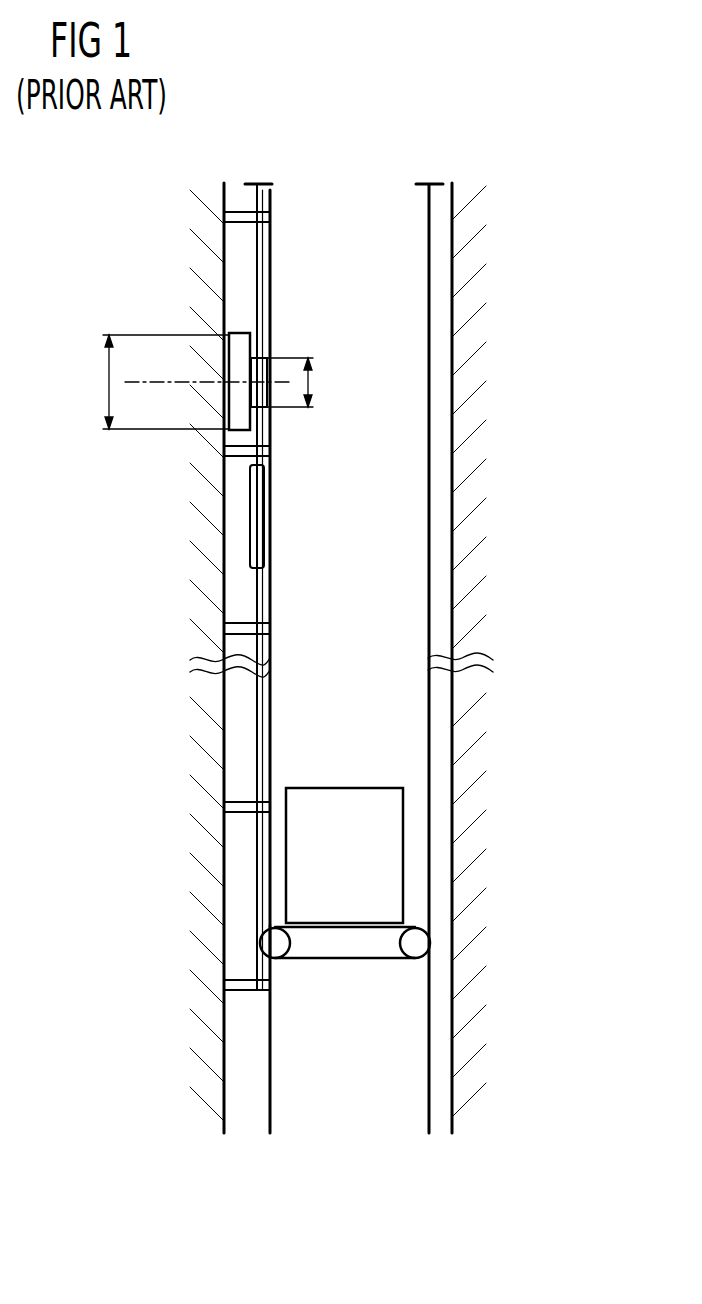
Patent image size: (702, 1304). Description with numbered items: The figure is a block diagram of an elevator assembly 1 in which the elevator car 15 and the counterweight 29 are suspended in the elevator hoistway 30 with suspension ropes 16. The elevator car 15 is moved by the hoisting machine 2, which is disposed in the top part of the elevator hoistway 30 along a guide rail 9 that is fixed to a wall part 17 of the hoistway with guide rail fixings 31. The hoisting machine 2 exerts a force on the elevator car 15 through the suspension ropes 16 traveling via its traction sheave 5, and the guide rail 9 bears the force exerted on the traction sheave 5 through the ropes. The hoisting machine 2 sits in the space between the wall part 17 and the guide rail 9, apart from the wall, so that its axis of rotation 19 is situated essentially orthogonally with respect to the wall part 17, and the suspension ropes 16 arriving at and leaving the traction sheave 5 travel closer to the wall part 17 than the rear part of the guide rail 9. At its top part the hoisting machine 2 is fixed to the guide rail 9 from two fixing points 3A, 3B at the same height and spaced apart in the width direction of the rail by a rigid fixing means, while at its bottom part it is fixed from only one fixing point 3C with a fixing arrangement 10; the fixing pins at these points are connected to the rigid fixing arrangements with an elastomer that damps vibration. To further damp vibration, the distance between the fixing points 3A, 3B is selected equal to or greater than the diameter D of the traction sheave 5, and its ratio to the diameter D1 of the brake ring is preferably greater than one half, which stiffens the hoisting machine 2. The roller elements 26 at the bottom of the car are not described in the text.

The elevator assembly 1 is at (587, 321).
The hoisting machine 2 is at (238, 398).
The fixing point 3A is at (320, 334).
The fixing point 3B is at (257, 345).
The fixing point 3C is at (320, 431).
The traction sheave 5 is at (253, 363).
The guide rail 9 is at (272, 256).
The fixing arrangement 10 is at (257, 418).
The elevator car 15 is at (343, 787).
The suspension ropes 16 is at (493, 722).
The wall part 17 is at (500, 607).
The axis of rotation 19 is at (135, 385).
The roller guide 26 is at (508, 958).
The counterweight 29 is at (265, 520).
The elevator hoistway 30 is at (360, 674).
The guide rail fixings 31 is at (240, 818).
The diameter of the traction sheave D is at (313, 382).
The diameter of the brake ring D1 is at (108, 382).